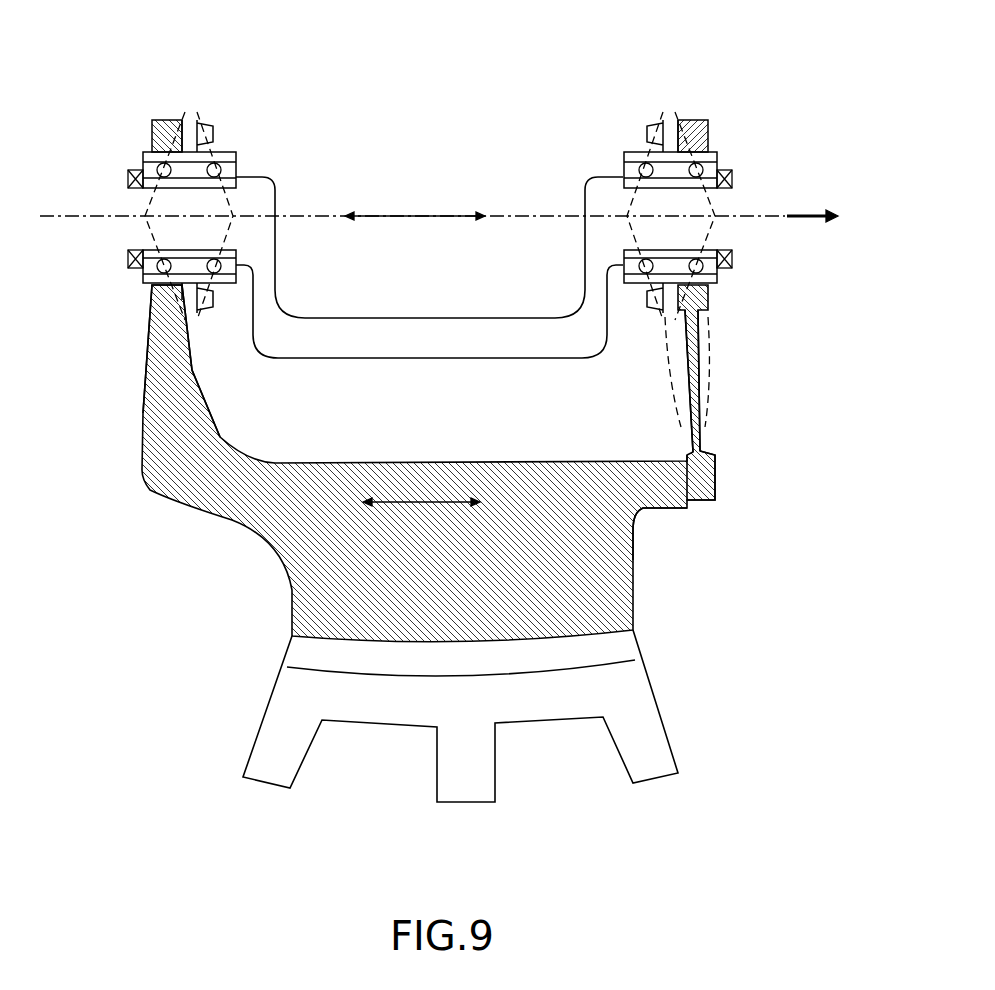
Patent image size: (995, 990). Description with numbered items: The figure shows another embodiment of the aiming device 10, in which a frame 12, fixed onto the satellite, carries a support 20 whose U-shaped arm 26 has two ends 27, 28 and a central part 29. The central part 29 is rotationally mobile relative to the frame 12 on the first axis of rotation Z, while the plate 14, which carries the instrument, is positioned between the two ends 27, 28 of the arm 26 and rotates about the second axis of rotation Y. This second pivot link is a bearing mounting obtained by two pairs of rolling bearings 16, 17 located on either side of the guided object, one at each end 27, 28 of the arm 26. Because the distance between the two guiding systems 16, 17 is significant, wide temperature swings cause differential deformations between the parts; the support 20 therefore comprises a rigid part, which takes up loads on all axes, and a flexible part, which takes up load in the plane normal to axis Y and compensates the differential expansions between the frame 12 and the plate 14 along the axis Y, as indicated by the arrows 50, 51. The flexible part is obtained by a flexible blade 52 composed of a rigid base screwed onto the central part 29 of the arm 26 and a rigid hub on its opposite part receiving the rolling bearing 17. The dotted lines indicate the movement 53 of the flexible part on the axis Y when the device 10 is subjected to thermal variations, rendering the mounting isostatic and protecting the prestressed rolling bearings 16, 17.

The aiming device 10 is at (258, 22).
The frame 12 is at (648, 737).
The plate 14 is at (357, 335).
The rolling bearing 16 is at (243, 152).
The rolling bearing 17 is at (717, 153).
The support 20 is at (210, 536).
The arm 26 is at (158, 453).
The end of the arm 27 is at (138, 115).
The end of the arm 28 is at (733, 104).
The central part 29 is at (603, 498).
The arrow 50 is at (413, 215).
The arrow 51 is at (404, 503).
The flexible blade 52 is at (700, 441).
The movement 53 is at (720, 337).